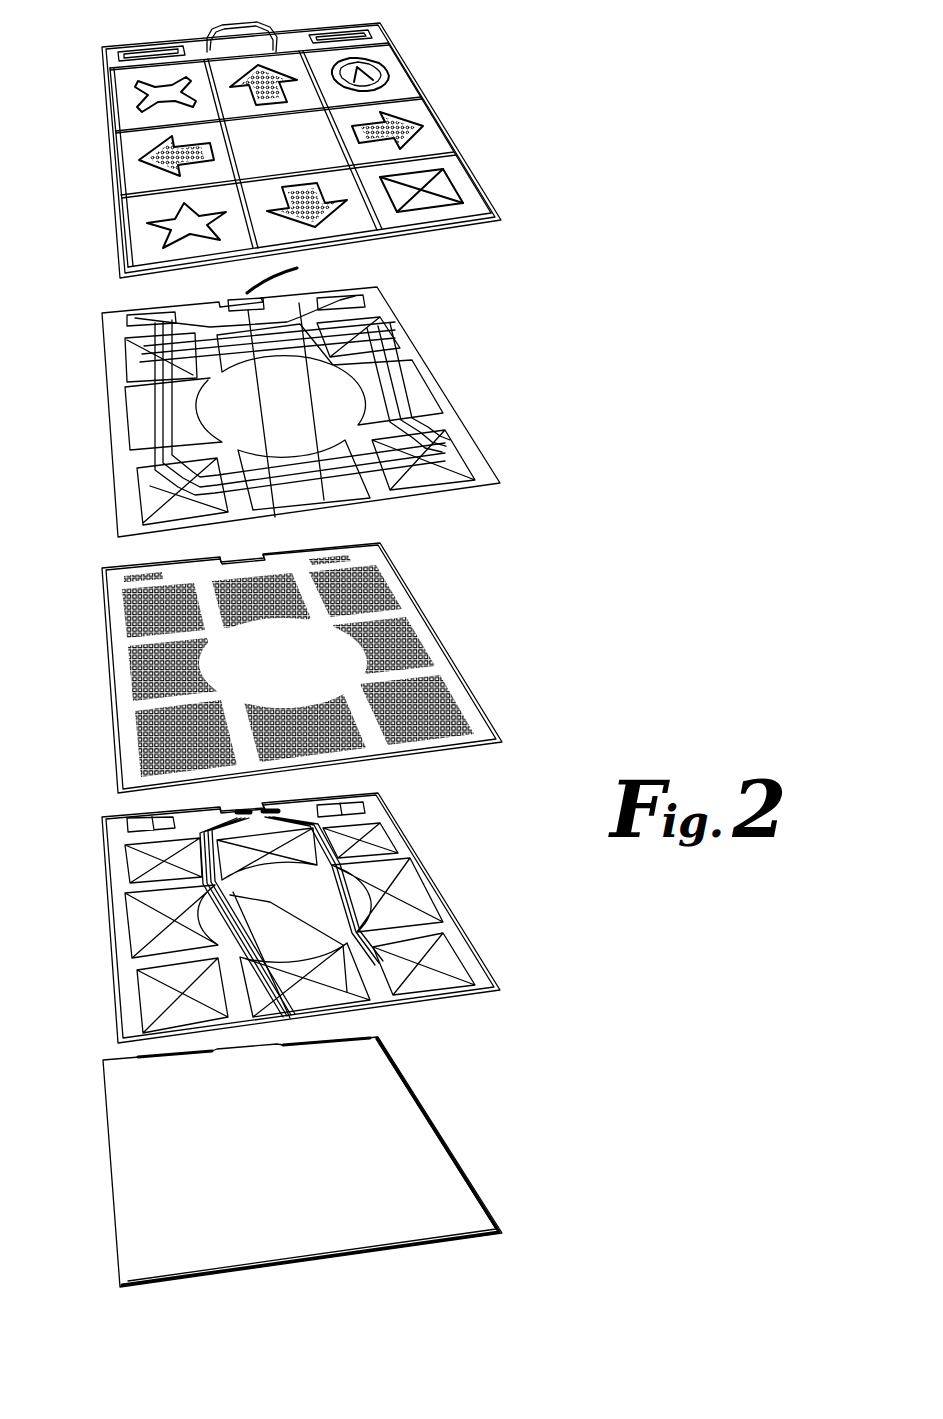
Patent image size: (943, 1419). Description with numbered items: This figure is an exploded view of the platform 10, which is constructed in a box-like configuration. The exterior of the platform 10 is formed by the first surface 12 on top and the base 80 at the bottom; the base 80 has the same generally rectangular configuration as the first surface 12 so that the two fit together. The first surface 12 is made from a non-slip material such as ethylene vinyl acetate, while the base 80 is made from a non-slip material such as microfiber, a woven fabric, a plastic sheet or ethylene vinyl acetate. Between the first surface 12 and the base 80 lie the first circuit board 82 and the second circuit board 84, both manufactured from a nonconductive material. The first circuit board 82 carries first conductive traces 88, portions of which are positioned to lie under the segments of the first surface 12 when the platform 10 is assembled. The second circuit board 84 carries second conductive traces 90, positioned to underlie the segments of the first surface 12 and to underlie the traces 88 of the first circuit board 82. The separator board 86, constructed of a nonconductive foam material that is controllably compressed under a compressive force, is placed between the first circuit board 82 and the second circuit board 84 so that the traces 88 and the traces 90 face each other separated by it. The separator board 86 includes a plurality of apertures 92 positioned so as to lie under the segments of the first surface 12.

The platform 10 is at (545, 1282).
The first surface 12 is at (110, 153).
The base 80 is at (111, 1162).
The first circuit board 82 is at (109, 417).
The second circuit board 84 is at (109, 920).
The separator board 86 is at (110, 680).
The first conductive traces 88 is at (137, 367).
The second conductive traces 90 is at (135, 852).
The apertures 92 is at (135, 605).